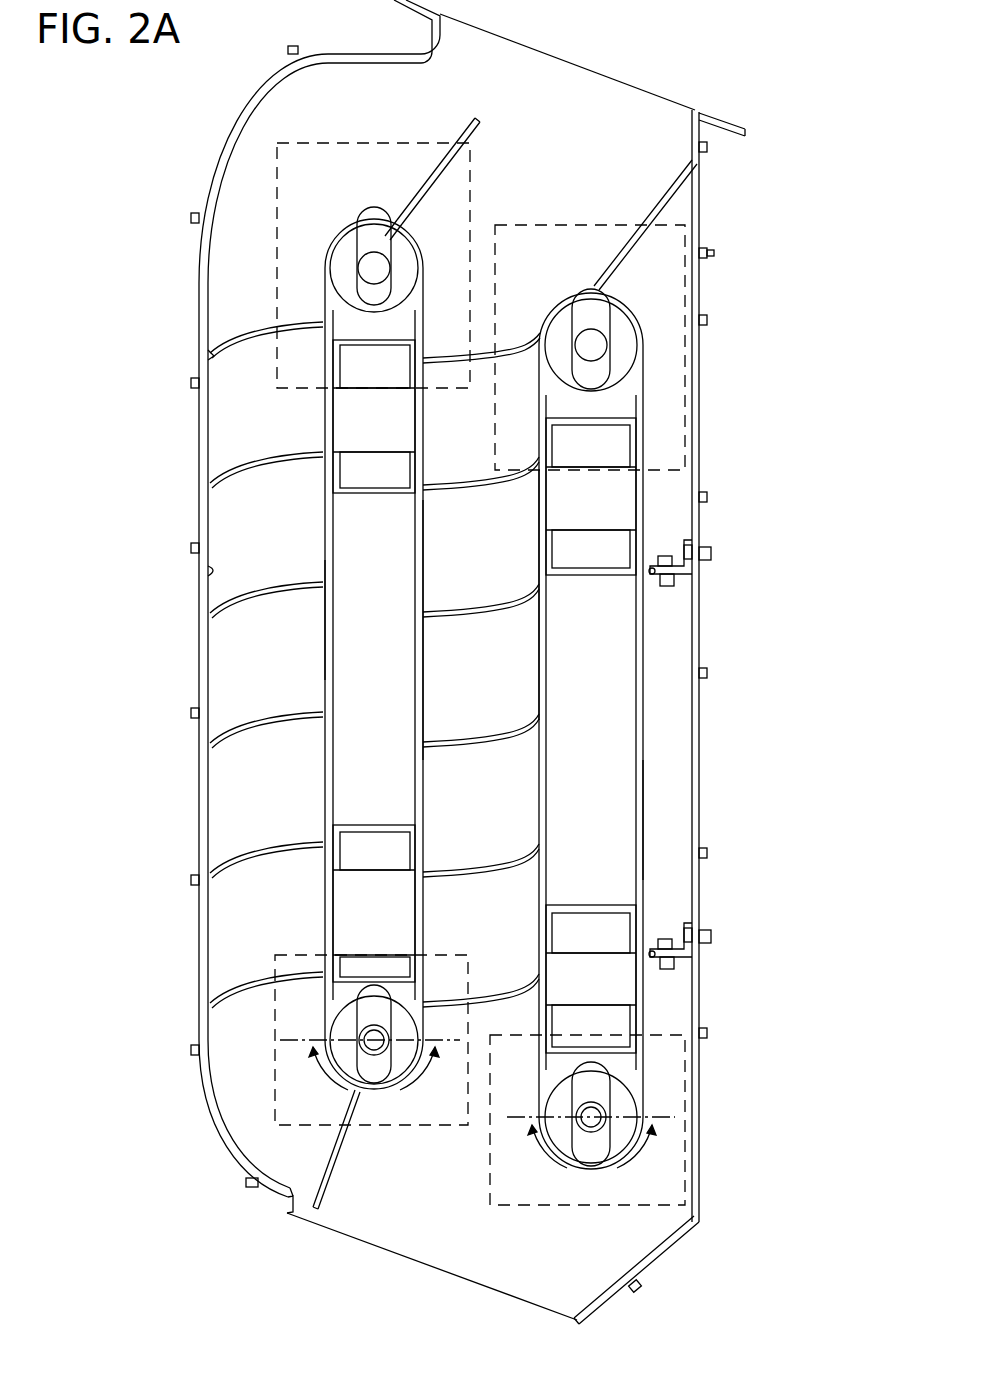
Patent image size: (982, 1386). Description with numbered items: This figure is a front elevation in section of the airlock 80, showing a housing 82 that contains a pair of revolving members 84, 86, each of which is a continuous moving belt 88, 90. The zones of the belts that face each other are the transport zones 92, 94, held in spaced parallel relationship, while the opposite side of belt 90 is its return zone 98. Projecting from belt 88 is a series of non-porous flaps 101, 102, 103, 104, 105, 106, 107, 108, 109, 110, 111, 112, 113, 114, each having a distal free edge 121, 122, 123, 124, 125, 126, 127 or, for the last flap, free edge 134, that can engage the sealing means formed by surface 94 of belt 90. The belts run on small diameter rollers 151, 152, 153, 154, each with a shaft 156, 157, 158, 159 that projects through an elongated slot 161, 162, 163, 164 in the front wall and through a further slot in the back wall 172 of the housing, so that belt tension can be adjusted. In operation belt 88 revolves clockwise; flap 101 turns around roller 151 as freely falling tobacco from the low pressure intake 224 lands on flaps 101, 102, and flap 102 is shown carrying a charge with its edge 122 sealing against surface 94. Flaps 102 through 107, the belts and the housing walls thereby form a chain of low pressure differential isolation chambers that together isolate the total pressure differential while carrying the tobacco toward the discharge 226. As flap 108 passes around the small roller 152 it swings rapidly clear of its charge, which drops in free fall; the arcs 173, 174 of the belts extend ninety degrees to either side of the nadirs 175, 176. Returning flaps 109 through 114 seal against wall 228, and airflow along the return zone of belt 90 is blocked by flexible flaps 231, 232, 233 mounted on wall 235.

The airlock 80 is at (830, 604).
The housing 82 is at (216, 152).
The revolving member 84 is at (380, 598).
The revolving member 86 is at (603, 632).
The belt 88 is at (423, 562).
The belt 90 is at (539, 527).
The transport zone 92 is at (424, 702).
The transport zone 94 is at (539, 650).
The return zone 98 is at (325, 620).
The flap 101 is at (425, 188).
The flap 102 is at (442, 358).
The flap 103 is at (457, 482).
The flap 104 is at (492, 610).
The flap 105 is at (475, 740).
The flap 106 is at (487, 868).
The flap 107 is at (513, 974).
The flap 108 is at (343, 1142).
The flap 109 is at (250, 982).
The flap 110 is at (308, 843).
The flap 111 is at (308, 713).
The flap 112 is at (303, 584).
The flap 113 is at (298, 454).
The flap 114 is at (257, 325).
The free edge 121 is at (480, 118).
The free edge 122 is at (540, 326).
The free edge 123 is at (530, 464).
The free edge 124 is at (530, 590).
The free edge 125 is at (532, 722).
The free edge 126 is at (530, 852).
The free edge 127 is at (530, 980).
The free edge 134 is at (210, 355).
The roller 151 is at (344, 256).
The roller 152 is at (400, 1080).
The roller 153 is at (568, 1150).
The roller 154 is at (614, 316).
The shaft 156 is at (378, 268).
The shaft 157 is at (360, 1048).
The shaft 158 is at (575, 1117).
The shaft 159 is at (596, 345).
The elongated slot 161 is at (366, 210).
The elongated slot 162 is at (583, 290).
The elongated slot 163 is at (655, 1120).
The elongated slot 164 is at (392, 1030).
The back wall 172 is at (365, 78).
The arc 173 is at (365, 1098).
The arc 174 is at (621, 1165).
The nadir 175 is at (346, 1092).
The nadir 176 is at (596, 1168).
The intake 224 is at (558, 77).
The discharge 226 is at (416, 1248).
The wall 228 is at (212, 571).
The flexible flap 231 is at (655, 951).
The flexible flap 232 is at (655, 568).
The flexible flap 233 is at (660, 202).
The wall 235 is at (690, 722).